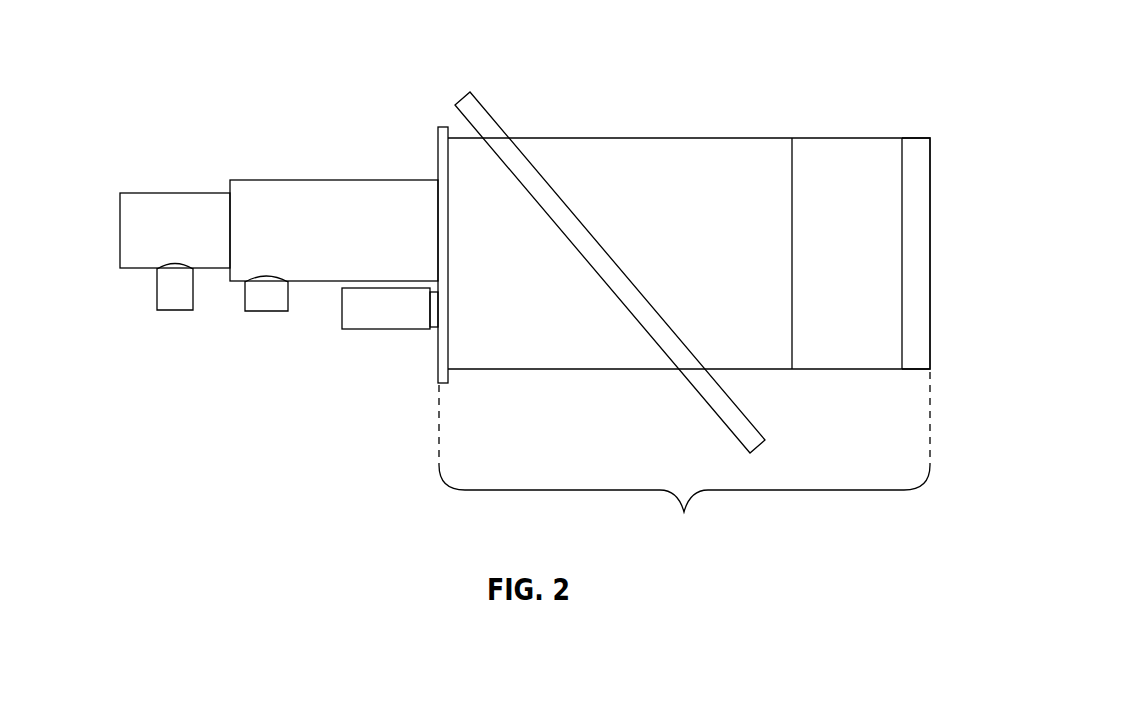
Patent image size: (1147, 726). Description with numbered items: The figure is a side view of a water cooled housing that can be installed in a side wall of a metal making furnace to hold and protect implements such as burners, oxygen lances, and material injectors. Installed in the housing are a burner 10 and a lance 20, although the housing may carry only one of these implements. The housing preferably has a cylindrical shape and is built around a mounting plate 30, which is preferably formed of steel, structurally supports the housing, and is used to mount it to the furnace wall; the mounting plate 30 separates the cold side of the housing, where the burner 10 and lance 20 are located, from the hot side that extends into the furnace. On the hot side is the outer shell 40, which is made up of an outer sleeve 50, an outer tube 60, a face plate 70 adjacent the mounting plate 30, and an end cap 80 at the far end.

The burner 10 is at (133, 270).
The lance 20 is at (390, 330).
The mounting plate 30 is at (489, 110).
The outer shell 40 is at (684, 458).
The outer sleeve 50 is at (845, 133).
The outer tube 60 is at (577, 372).
The face plate 70 is at (441, 385).
The end cap 80 is at (918, 133).